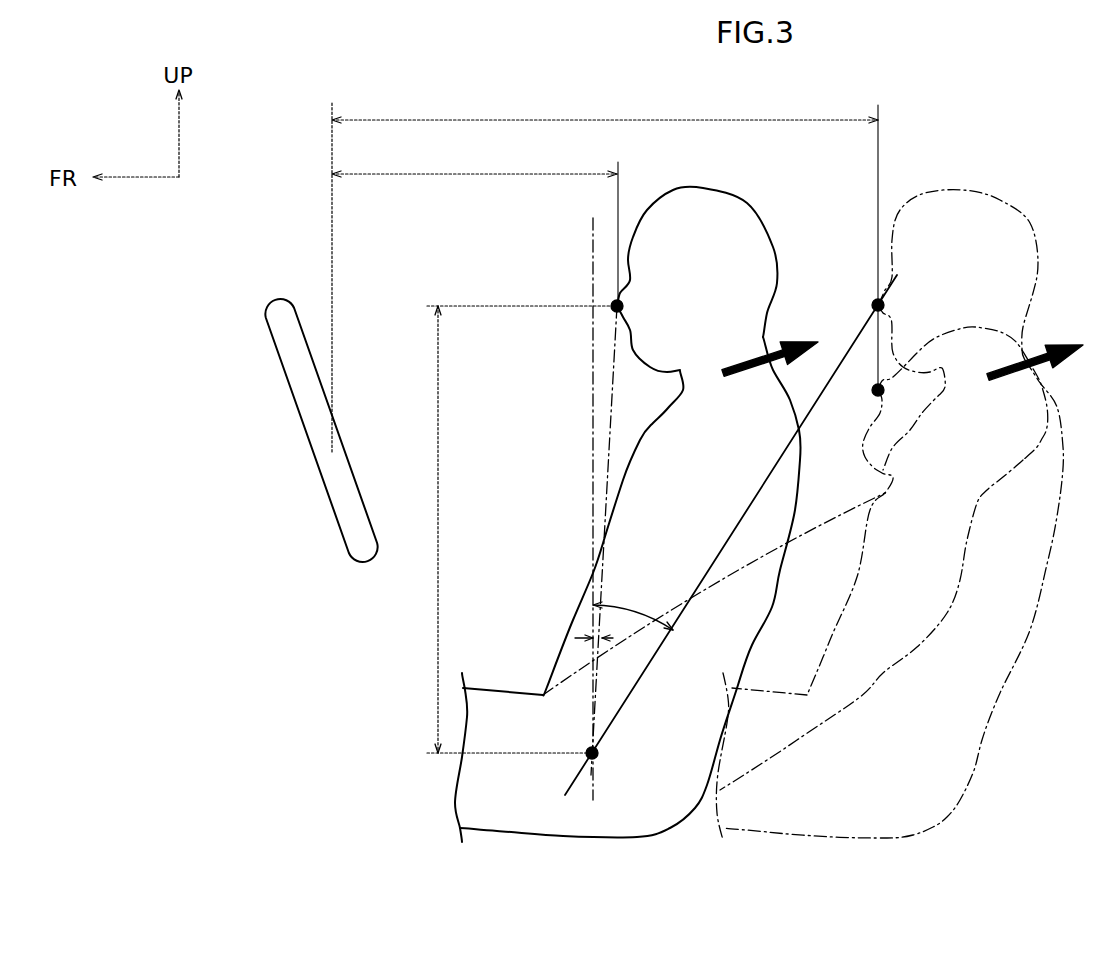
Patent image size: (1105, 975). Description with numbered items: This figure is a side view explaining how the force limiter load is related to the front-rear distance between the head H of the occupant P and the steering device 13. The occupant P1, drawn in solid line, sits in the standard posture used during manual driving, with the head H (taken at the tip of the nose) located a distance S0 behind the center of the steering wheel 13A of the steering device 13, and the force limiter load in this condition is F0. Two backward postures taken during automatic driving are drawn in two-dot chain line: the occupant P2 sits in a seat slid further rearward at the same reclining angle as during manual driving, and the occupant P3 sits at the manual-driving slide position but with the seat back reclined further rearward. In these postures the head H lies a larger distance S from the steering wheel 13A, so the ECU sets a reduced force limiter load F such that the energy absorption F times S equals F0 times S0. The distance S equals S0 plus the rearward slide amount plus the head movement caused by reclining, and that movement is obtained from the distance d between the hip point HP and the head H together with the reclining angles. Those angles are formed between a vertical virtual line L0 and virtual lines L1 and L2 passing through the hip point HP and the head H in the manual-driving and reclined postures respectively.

The steering device 13 is at (291, 430).
The steering wheel 13A is at (280, 365).
The distance between head and steering device during automatic driving S is at (605, 119).
The distance between head and steering device during manual driving S0 is at (482, 176).
The head H is at (740, 203).
The force limiter load during manual driving F0 is at (790, 341).
The force limiter load during automatic driving F is at (1055, 344).
The virtual straight line extending in the vehicle vertical direction L0 is at (590, 412).
The virtual straight line through hip point and head during manual driving L1 is at (612, 443).
The virtual straight line through hip point and head when reclined L2 is at (769, 477).
The distance from hip point to head d is at (439, 510).
The hip point HP is at (598, 758).
The occupant P is at (759, 626).
The occupant in standard sitting posture P1 is at (558, 838).
The occupant in rearward-slid seat position P2 is at (880, 841).
The occupant in reclined seat position P3 is at (885, 679).